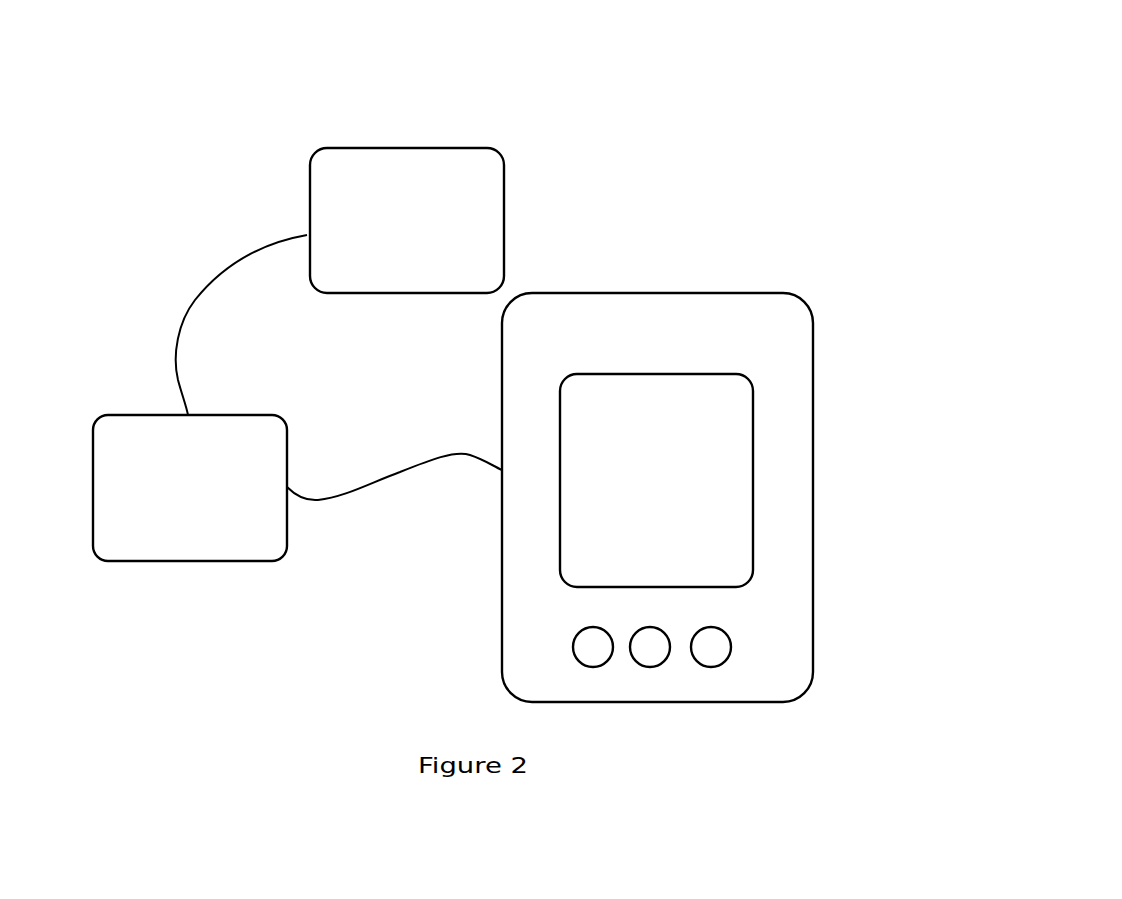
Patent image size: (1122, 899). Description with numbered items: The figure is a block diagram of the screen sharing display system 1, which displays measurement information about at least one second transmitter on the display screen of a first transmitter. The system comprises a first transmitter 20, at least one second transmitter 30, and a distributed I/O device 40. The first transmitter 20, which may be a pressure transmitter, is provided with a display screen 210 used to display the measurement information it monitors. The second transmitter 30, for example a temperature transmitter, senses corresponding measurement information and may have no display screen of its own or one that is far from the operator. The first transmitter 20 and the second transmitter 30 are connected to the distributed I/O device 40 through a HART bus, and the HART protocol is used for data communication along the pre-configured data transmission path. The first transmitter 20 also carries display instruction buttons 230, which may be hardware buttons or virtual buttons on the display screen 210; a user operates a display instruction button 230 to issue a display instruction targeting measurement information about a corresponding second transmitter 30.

The screen sharing display system 1 is at (715, 90).
The first transmitter 20 is at (790, 325).
The second transmitter 30 is at (330, 176).
The distributed I/O device 40 is at (120, 441).
The display screen 210 is at (722, 460).
The display instruction button 230 is at (715, 647).